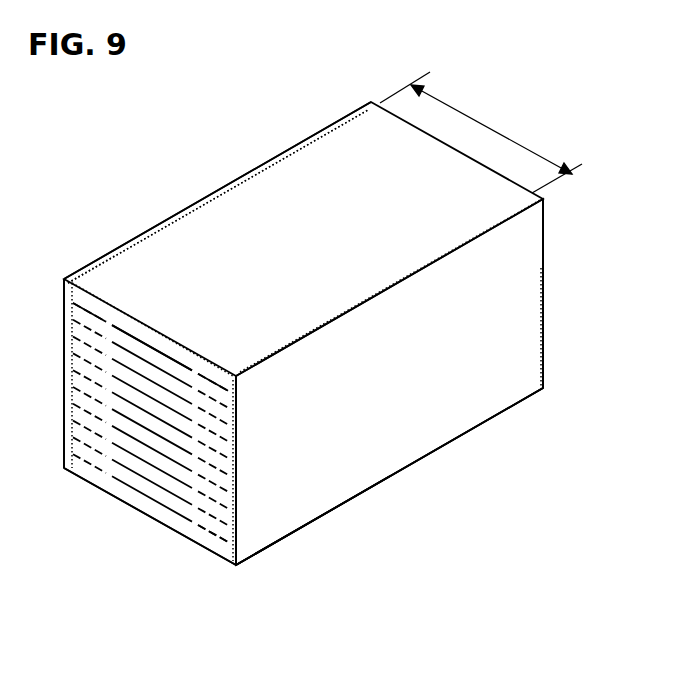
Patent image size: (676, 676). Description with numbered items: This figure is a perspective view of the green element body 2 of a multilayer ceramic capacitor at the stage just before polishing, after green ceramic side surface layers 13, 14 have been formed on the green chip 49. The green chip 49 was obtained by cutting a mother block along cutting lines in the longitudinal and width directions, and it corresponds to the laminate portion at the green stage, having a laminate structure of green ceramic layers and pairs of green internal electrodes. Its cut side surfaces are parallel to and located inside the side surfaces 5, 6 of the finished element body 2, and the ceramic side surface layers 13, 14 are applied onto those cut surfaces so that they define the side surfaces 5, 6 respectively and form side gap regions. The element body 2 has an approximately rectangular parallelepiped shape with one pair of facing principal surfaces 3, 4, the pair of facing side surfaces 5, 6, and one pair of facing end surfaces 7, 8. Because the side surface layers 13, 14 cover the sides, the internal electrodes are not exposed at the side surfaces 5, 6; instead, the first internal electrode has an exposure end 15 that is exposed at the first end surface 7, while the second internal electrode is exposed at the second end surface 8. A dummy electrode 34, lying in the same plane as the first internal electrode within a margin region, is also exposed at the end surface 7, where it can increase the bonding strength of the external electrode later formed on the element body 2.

The element body 2 is at (303, 310).
The first principal surface 3 is at (286, 195).
The second principal surface 4 is at (417, 435).
The first side surface 5 is at (168, 233).
The second side surface 6 is at (463, 403).
The first end surface 7 is at (92, 472).
The second end surface 8 is at (520, 278).
The ceramic side surface layer 13 is at (98, 257).
The ceramic side surface layer 14 is at (355, 483).
The exposure end 15 is at (137, 487).
The dummy electrode 34 is at (205, 525).
The green chip 49 is at (485, 122).